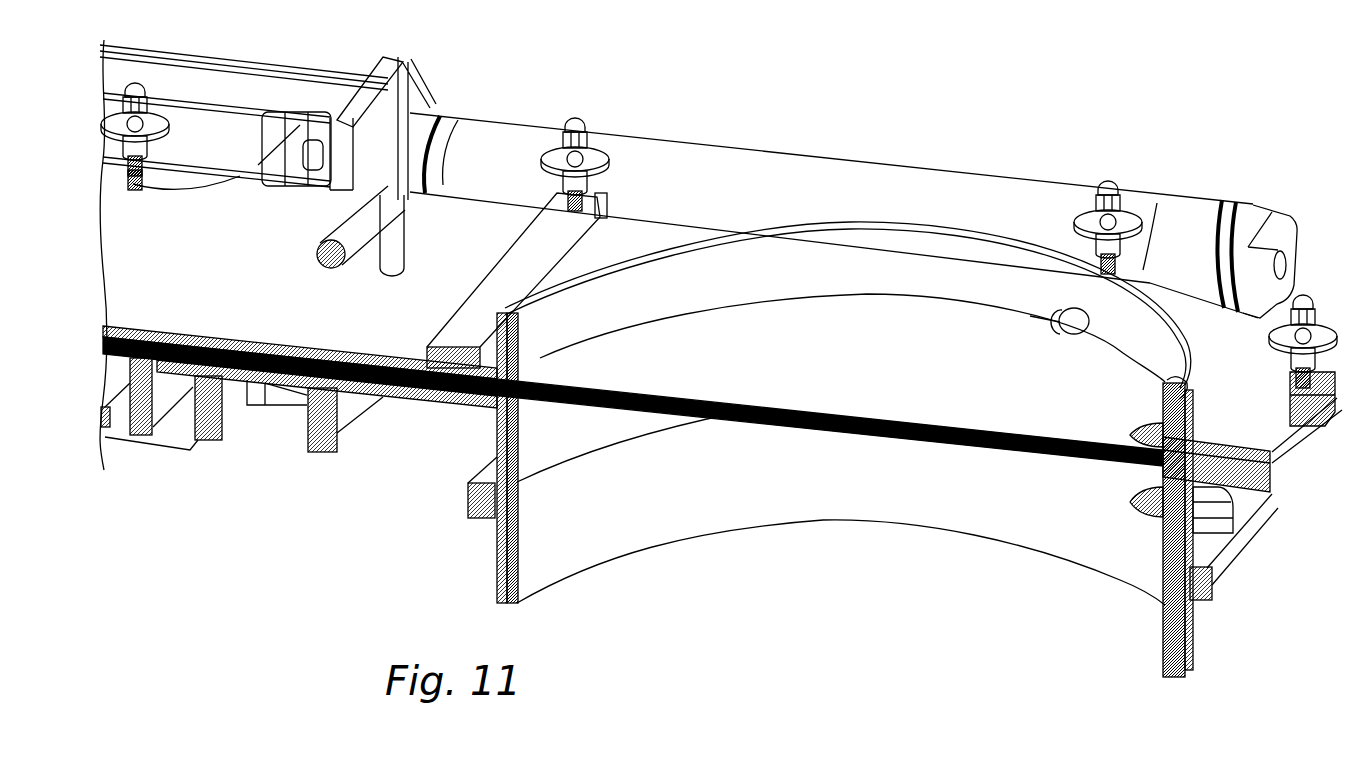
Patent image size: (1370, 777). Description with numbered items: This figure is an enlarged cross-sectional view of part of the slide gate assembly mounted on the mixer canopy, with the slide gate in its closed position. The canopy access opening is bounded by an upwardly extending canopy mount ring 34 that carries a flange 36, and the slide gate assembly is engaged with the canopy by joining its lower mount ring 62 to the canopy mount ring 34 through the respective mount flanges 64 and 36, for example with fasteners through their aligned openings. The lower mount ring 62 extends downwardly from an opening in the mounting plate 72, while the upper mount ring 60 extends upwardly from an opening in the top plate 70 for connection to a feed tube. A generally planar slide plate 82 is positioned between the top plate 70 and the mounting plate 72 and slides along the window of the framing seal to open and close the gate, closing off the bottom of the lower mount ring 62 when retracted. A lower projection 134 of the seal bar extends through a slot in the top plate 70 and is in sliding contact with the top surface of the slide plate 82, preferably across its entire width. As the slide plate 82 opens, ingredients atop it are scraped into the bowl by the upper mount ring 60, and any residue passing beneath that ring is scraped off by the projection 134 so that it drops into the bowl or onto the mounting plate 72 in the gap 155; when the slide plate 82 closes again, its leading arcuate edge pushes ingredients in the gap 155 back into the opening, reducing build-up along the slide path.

The canopy mount ring 34 is at (1188, 652).
The flange 36 is at (1217, 582).
The upper mount ring 60 is at (803, 252).
The lower mount ring 62 is at (553, 430).
The mount flange 64 is at (1207, 548).
The top plate 70 is at (472, 223).
The mounting plate 72 is at (452, 400).
The slide plate 82 is at (477, 393).
The lower projection 134 is at (425, 392).
The gap 155 is at (492, 368).